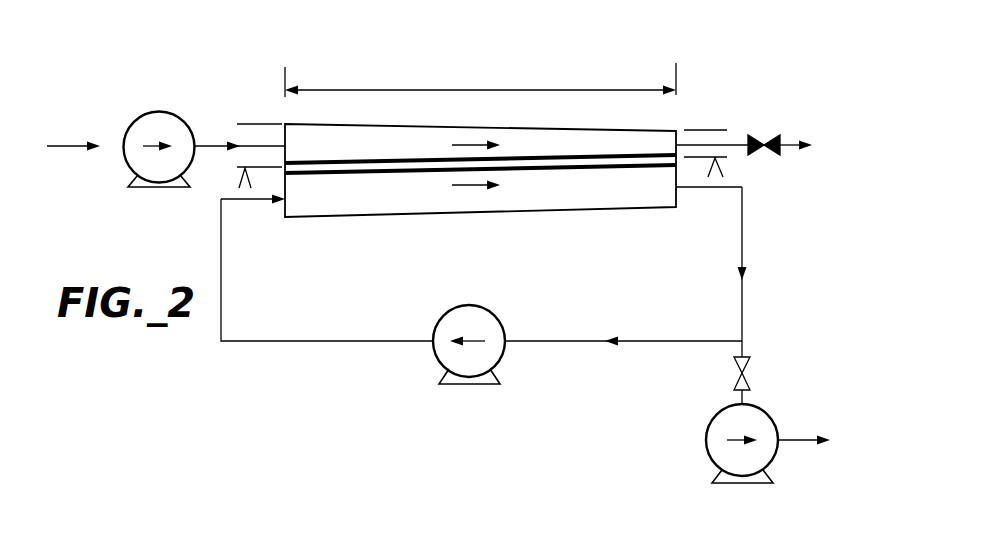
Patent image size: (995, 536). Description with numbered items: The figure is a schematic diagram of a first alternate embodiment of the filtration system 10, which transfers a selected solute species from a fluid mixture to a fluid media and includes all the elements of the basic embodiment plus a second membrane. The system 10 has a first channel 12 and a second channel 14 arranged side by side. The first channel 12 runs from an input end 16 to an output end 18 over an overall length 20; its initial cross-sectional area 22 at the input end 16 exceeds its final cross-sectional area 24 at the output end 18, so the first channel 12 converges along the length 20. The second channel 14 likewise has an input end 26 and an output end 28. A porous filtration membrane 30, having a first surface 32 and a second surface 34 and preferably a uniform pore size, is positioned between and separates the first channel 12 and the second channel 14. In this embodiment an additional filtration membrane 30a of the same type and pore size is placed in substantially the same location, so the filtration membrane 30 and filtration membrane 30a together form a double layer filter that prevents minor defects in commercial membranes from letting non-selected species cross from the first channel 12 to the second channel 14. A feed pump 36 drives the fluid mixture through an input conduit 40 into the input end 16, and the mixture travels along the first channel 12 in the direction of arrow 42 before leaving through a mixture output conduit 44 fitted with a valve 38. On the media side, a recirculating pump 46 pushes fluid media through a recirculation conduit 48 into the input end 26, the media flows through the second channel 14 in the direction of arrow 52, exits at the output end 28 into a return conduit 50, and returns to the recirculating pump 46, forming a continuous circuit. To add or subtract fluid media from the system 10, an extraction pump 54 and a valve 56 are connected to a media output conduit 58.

The filtration system 10 is at (207, 48).
The first channel 12 is at (433, 138).
The second channel 14 is at (428, 183).
The input end 16 is at (287, 148).
The output end 18 is at (676, 145).
The overall length 20 is at (355, 90).
The initial cross-sectional area 22 is at (251, 112).
The final cross-sectional area 24 is at (702, 115).
The input end 26 is at (288, 186).
The output end 28 is at (676, 188).
The filtration membrane 30 is at (544, 172).
The filtration membrane 30a is at (340, 174).
The first surface 32 is at (397, 163).
The second surface 34 is at (382, 177).
The feed pump 36 is at (157, 112).
The valve 38 is at (764, 138).
The input conduit 40 is at (212, 146).
The arrow 42 is at (470, 145).
The mixture output conduit 44 is at (786, 148).
The recirculating pump 46 is at (503, 353).
The recirculation conduit 48 is at (342, 342).
The return conduit 50 is at (742, 300).
The arrow 52 is at (470, 186).
The extraction pump 54 is at (707, 431).
The valve 56 is at (747, 375).
The media output conduit 58 is at (790, 436).